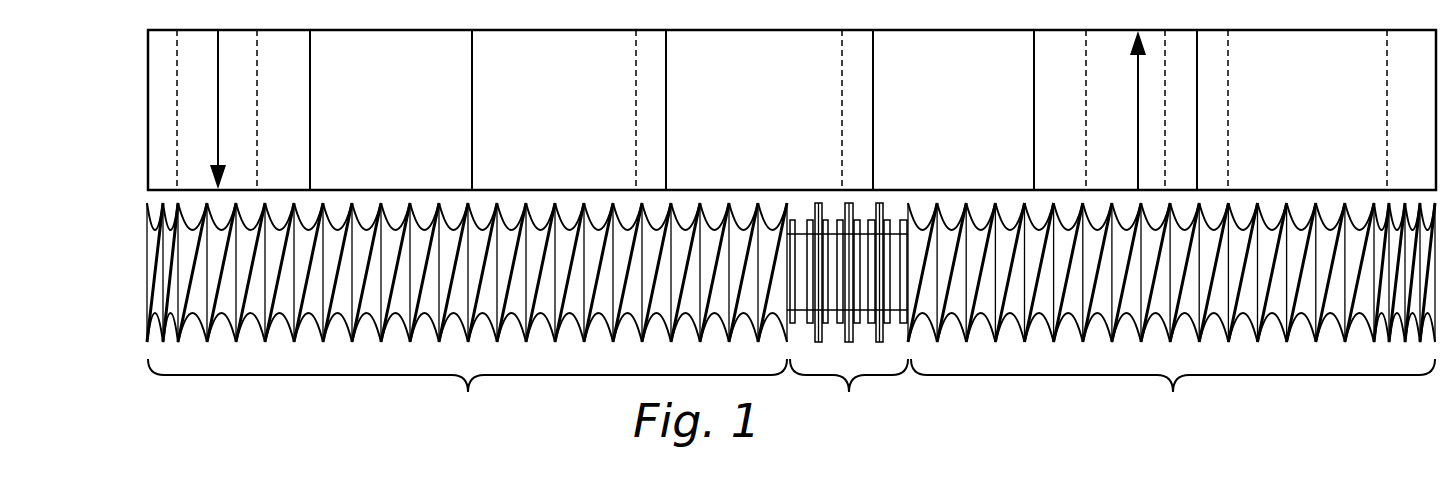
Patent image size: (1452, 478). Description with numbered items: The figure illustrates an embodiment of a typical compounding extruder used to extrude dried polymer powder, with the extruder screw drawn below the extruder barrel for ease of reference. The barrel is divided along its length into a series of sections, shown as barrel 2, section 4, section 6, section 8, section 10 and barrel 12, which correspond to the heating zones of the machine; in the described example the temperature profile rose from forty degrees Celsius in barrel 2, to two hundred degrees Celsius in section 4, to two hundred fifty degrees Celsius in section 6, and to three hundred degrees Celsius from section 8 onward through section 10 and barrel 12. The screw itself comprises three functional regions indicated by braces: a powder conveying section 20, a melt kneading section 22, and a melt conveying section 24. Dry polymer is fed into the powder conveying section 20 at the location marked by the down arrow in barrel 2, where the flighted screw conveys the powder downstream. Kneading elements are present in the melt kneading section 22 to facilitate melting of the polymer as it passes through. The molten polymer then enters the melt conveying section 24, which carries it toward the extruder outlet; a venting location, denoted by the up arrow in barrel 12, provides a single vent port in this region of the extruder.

The barrel 2 is at (190, 114).
The section 4 is at (369, 114).
The section 6 is at (545, 114).
The section 8 is at (745, 114).
The section 10 is at (938, 114).
The barrel 12 is at (1049, 114).
The powder conveying section 20 is at (1328, 114).
The melt kneading section 22 is at (847, 313).
The melt conveying section 24 is at (1171, 313).